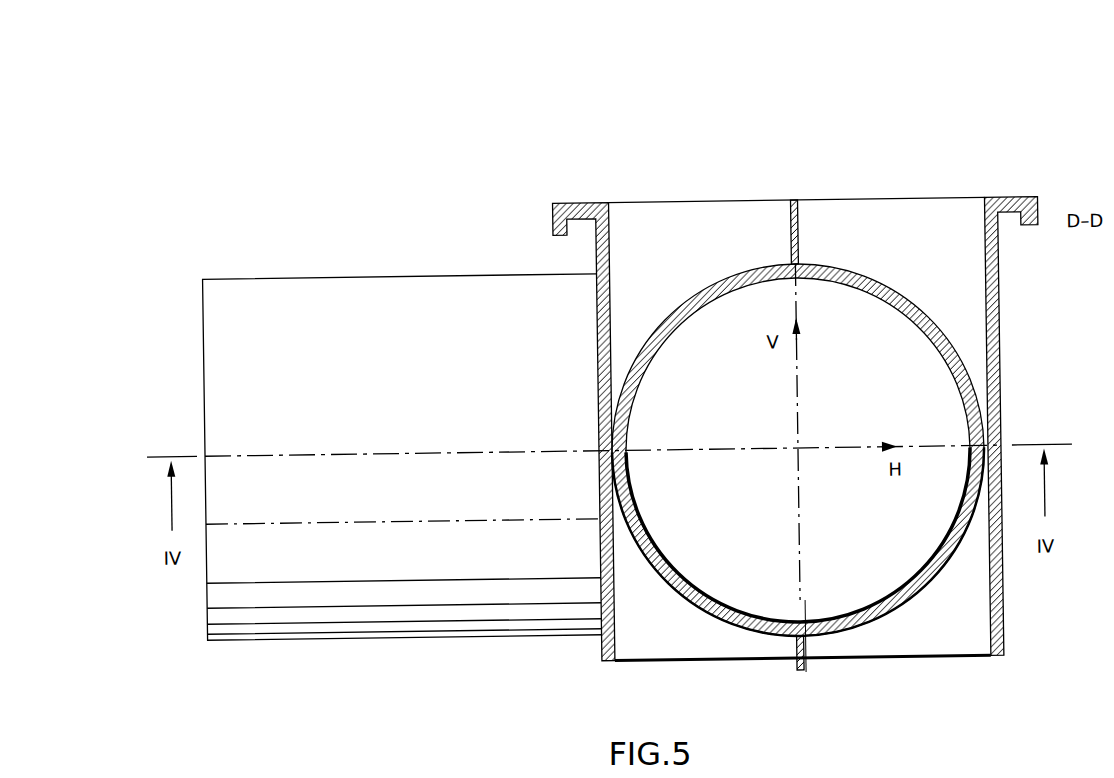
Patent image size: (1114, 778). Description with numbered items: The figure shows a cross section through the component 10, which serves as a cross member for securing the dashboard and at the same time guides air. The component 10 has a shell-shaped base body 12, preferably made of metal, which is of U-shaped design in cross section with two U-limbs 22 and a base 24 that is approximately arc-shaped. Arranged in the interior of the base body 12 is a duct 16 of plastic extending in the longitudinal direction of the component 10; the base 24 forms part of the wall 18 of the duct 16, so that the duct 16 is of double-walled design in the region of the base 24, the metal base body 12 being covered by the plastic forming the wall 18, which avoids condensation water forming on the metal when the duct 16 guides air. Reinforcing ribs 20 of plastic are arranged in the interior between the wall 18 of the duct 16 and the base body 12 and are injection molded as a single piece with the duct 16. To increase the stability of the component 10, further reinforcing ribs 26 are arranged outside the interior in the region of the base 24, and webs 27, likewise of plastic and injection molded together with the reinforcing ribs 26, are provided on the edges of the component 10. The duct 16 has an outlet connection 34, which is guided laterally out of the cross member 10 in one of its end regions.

The component 10 is at (565, 135).
The base body 12 is at (1004, 393).
The duct 16 is at (772, 575).
The wall 18 is at (695, 606).
The reinforcing ribs 20 is at (906, 238).
The U-limbs 22 is at (597, 332).
The base 24 is at (860, 626).
The further reinforcing ribs 26 is at (970, 599).
The webs 27 is at (999, 551).
The outlet connection 34 is at (353, 571).